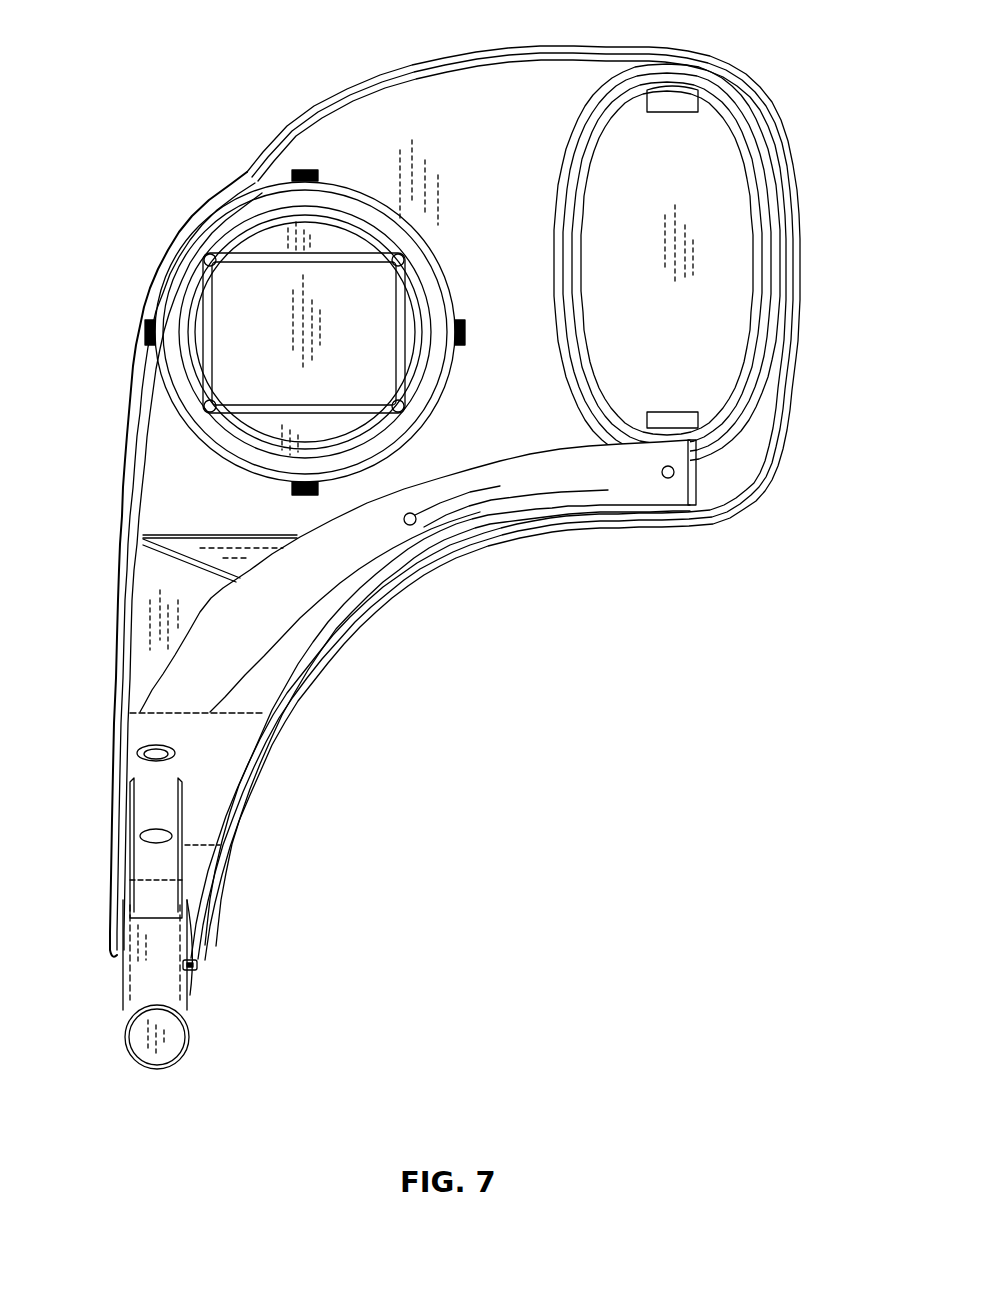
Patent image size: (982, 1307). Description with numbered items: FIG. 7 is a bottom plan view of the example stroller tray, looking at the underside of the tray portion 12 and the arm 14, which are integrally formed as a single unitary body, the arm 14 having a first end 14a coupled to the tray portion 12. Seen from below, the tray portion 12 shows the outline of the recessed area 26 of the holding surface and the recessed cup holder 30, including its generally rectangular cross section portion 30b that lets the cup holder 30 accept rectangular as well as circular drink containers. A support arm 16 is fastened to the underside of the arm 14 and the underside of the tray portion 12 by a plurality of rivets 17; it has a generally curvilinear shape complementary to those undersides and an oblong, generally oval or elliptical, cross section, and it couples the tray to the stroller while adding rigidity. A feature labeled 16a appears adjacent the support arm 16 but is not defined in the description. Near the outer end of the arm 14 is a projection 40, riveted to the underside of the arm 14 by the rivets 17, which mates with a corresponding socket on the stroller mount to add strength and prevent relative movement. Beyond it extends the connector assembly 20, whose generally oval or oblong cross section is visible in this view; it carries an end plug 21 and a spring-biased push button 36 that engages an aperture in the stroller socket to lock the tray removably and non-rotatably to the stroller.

The tray portion 12 is at (556, 78).
The recessed area 26 is at (730, 188).
The recessed cup holder 30 is at (232, 333).
The generally rectangular cross section portion 30b is at (226, 350).
The arm 14 is at (118, 888).
The first end 14a is at (152, 585).
The support arm 16 is at (305, 595).
The band end 16a is at (180, 1000).
The rivets 17 is at (668, 478).
The projection 40 is at (152, 797).
The connector assembly 20 is at (150, 987).
The end plug 21 is at (140, 1050).
The spring-biased push button 36 is at (197, 965).